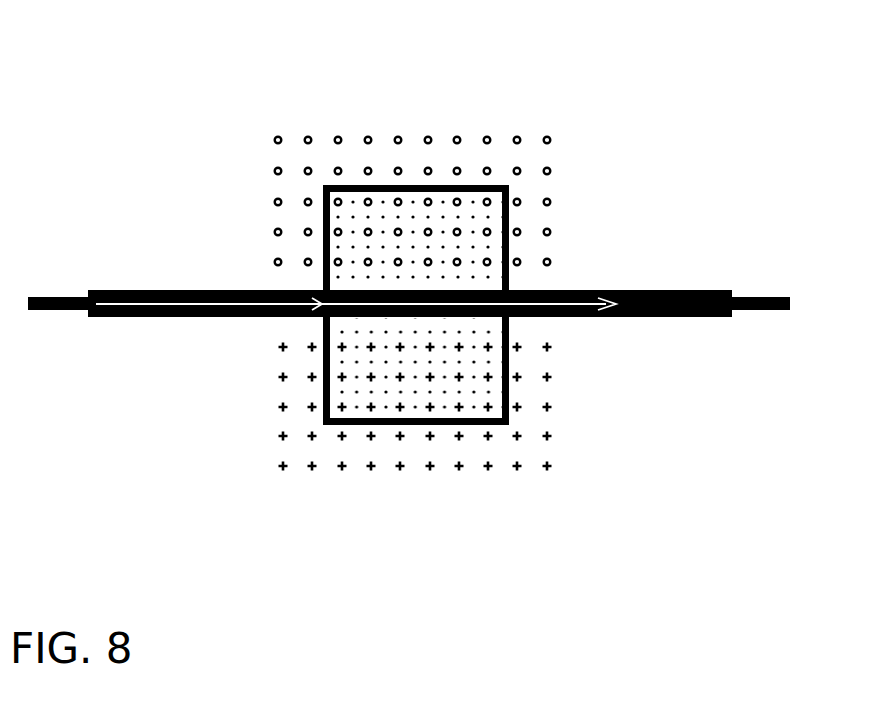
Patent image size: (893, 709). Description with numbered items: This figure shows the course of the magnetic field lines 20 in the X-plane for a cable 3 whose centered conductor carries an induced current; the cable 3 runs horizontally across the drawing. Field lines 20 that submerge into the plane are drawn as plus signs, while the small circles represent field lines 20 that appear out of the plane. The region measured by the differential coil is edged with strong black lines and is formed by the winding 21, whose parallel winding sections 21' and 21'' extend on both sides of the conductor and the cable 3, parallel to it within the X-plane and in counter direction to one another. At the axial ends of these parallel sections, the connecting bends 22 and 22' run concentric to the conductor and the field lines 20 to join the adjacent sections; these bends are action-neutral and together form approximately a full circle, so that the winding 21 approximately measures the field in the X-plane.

The cable 3 is at (192, 258).
The field lines 20 is at (490, 228).
The winding 21 is at (468, 331).
The winding section 21' is at (416, 168).
The winding section 21'' is at (416, 472).
The connecting bend 22 is at (217, 377).
The connecting bend 22' is at (661, 375).